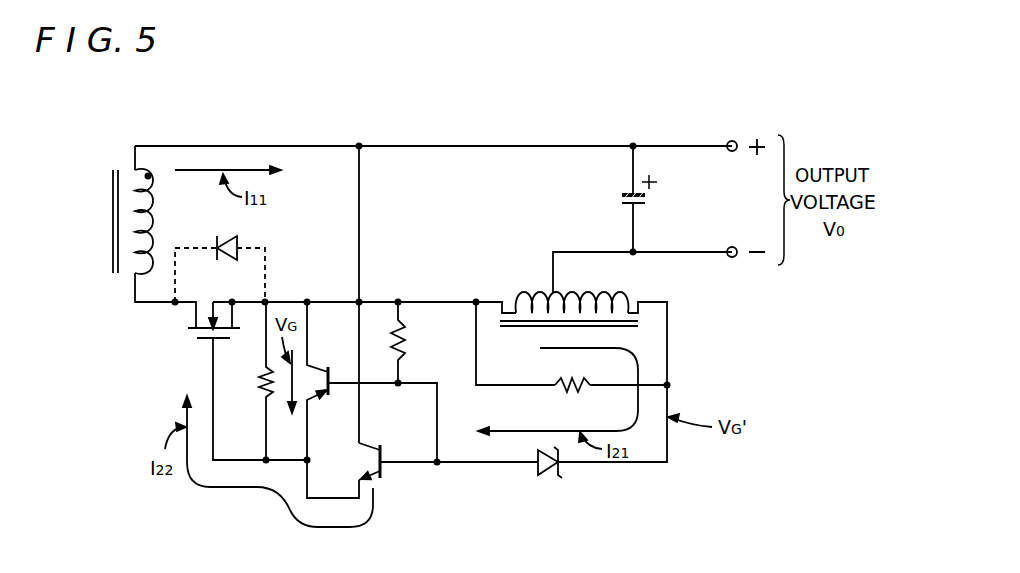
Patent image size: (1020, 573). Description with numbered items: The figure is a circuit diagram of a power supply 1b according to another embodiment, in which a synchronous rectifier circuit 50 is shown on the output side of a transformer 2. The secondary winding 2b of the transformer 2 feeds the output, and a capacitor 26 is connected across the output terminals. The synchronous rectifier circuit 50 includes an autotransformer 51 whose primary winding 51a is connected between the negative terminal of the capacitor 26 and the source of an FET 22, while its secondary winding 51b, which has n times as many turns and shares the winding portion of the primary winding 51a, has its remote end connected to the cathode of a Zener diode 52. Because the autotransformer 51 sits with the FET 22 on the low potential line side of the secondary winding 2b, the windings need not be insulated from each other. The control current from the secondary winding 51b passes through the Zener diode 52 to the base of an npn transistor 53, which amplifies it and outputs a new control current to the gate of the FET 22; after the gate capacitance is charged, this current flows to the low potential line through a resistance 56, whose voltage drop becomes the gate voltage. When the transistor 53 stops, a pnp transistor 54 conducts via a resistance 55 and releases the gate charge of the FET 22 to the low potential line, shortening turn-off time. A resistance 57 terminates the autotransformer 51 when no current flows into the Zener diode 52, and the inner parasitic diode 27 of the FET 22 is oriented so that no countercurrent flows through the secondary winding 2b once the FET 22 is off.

The power supply 1b is at (460, 124).
The synchronous rectifier circuit 50 is at (546, 130).
The transformer 2 is at (154, 192).
The secondary winding 2b is at (150, 218).
The inner parasitic diode 27 is at (229, 237).
The FET 22 is at (204, 342).
The resistance 56 is at (258, 376).
The pnp transistor 54 is at (331, 366).
The resistance 55 is at (407, 342).
The npn transistor 53 is at (386, 452).
The Zener diode 52 is at (551, 472).
The resistance 57 is at (565, 390).
The autotransformer 51 is at (560, 321).
The primary winding 51a is at (523, 292).
The secondary winding 51b is at (604, 292).
The capacitor 26 is at (637, 207).